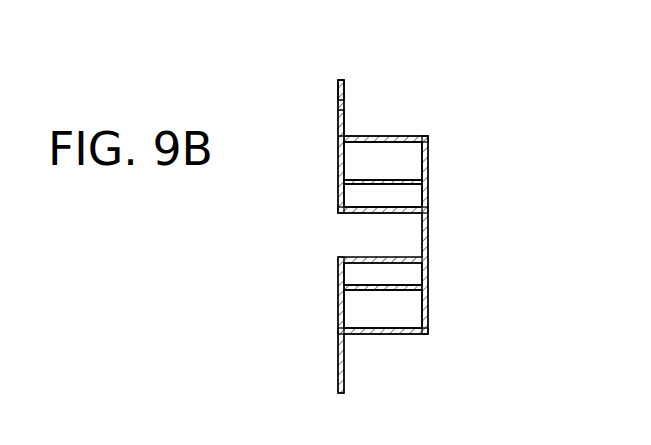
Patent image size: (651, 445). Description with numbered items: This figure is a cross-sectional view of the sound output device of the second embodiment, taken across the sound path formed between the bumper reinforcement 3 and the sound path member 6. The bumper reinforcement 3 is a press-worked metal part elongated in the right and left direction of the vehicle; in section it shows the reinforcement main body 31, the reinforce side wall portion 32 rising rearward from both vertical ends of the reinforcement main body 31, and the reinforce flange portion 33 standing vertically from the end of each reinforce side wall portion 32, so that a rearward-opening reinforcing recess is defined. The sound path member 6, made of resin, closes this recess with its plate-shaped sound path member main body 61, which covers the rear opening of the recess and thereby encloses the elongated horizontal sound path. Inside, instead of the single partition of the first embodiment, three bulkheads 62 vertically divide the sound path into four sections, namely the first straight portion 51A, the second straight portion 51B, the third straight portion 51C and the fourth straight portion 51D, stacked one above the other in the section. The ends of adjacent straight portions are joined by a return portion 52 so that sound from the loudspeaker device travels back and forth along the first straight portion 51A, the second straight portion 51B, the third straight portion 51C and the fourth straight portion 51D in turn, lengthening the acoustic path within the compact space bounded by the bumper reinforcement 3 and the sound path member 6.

The bumper reinforcement 3 is at (430, 127).
The reinforcement main body 31 is at (430, 245).
The reinforce side wall portion 32 is at (395, 135).
The reinforce flange portion 33 is at (345, 122).
The sound path member 6 is at (329, 94).
The sound path member main body 61 is at (333, 131).
The first straight portion 51A is at (409, 152).
The second straight portion 51B is at (365, 202).
The third straight portion 51C is at (367, 277).
The fourth straight portion 51D is at (410, 324).
The return portion 52 is at (415, 274).
The bulkhead 62 is at (393, 210).